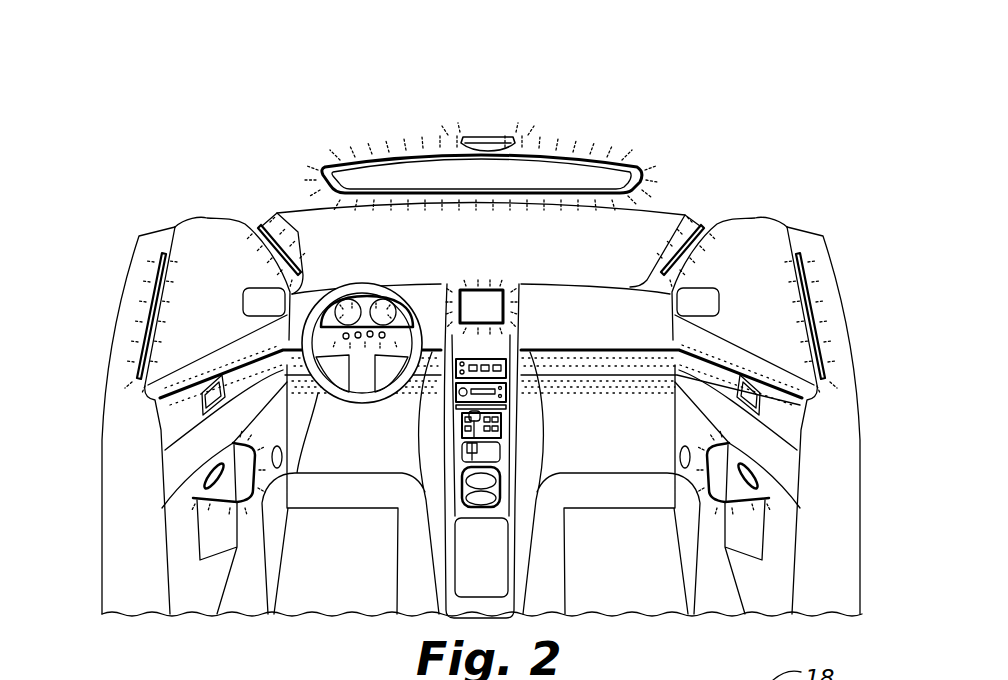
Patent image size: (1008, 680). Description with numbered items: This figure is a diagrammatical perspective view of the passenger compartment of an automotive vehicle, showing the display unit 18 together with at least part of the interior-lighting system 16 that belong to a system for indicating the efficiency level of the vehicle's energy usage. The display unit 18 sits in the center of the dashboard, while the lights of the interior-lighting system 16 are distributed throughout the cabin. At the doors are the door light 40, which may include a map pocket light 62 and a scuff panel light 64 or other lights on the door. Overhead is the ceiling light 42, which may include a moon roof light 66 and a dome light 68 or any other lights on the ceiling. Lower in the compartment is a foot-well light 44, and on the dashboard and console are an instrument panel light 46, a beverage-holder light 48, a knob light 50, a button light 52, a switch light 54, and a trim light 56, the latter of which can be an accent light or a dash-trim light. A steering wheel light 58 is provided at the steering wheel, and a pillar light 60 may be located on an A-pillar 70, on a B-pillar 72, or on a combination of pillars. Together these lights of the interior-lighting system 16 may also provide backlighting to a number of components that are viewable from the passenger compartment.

The interior-lighting system 16 is at (753, 110).
The display unit 18 is at (482, 289).
The door light 40 is at (124, 488).
The ceiling light 42 is at (428, 126).
The foot-well light 44 is at (410, 406).
The instrument panel light 46 is at (365, 286).
The beverage-holder light 48 is at (500, 492).
The knob light 50 is at (433, 455).
The button light 52 is at (502, 430).
The switch light 54 is at (456, 358).
The trim light 56 is at (247, 357).
The steering wheel light 58 is at (348, 330).
The pillar light 60 is at (253, 225).
The map pocket light 62 is at (233, 447).
The scuff panel light 64 is at (283, 458).
The moon roof light 66 is at (640, 172).
The dome light 68 is at (500, 132).
The A-pillar 70 is at (280, 256).
The B-pillar 72 is at (117, 312).